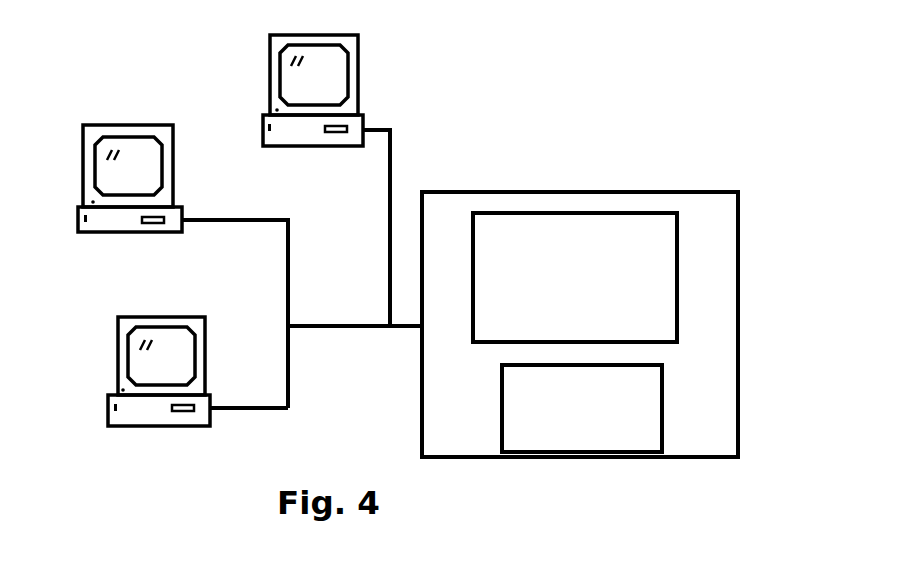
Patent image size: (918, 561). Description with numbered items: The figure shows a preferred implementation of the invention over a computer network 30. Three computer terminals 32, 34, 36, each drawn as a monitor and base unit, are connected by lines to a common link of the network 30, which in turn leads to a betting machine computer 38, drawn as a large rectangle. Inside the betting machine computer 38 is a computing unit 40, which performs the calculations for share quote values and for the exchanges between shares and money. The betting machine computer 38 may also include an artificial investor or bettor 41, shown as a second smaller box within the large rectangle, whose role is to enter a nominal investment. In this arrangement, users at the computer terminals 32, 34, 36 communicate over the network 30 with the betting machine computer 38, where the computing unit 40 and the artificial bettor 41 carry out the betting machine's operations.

The computer network 30 is at (338, 327).
The computer terminal 32 is at (358, 67).
The computer terminal 34 is at (126, 125).
The computer terminal 36 is at (152, 426).
The betting machine computer 38 is at (738, 258).
The computing unit 40 is at (613, 213).
The artificial bettor 41 is at (542, 457).